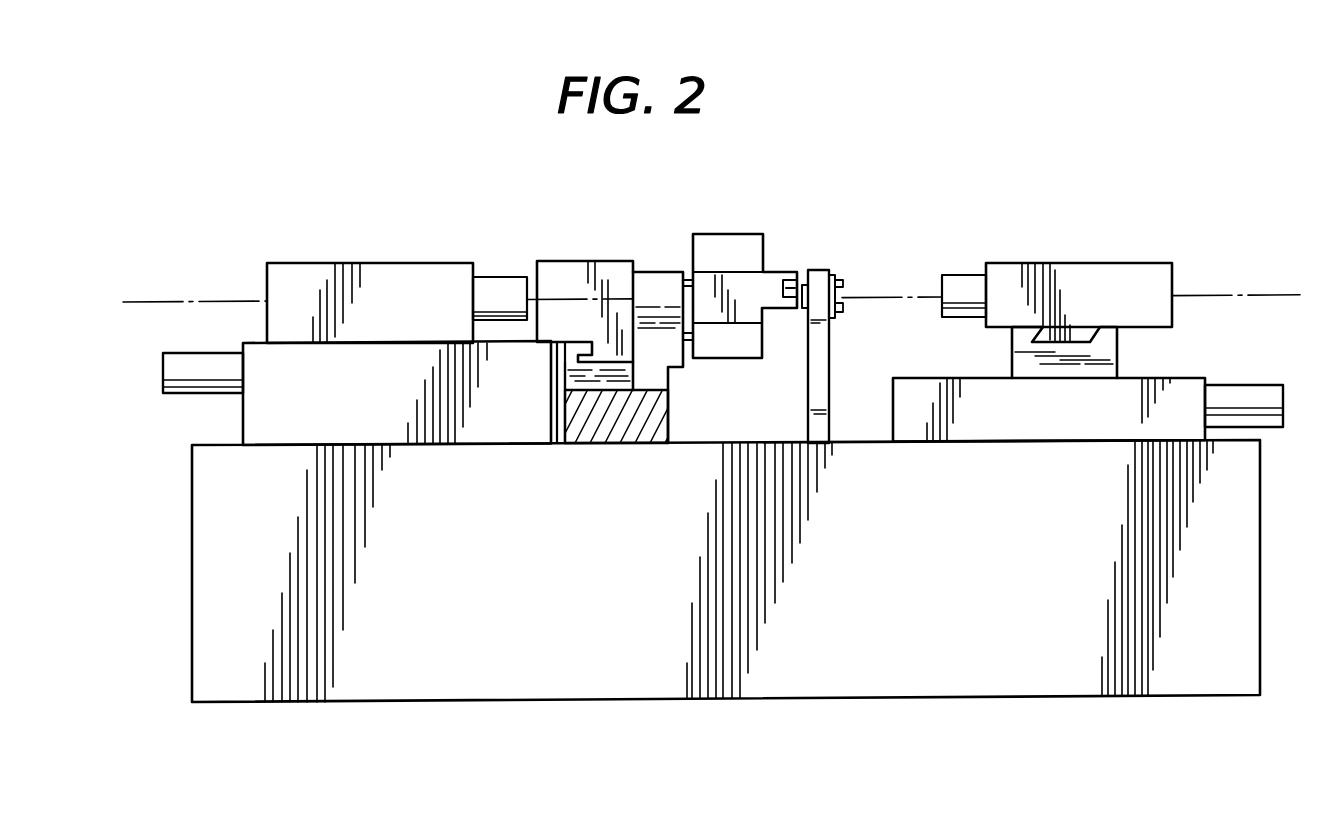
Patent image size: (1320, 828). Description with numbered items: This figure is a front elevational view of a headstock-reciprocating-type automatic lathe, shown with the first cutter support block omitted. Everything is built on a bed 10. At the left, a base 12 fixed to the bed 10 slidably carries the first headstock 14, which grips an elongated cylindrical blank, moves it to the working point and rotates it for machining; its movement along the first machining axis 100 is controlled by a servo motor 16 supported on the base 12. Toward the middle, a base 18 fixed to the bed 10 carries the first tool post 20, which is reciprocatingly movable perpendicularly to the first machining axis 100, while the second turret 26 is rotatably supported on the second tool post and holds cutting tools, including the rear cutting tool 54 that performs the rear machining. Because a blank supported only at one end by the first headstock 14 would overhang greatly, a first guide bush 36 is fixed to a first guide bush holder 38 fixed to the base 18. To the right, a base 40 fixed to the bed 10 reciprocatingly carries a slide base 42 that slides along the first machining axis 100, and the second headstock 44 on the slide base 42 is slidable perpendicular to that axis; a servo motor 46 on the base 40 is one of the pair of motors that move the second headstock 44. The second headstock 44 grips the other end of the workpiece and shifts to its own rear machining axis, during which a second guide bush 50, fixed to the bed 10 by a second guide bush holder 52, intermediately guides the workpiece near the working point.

The bed 10 is at (1240, 616).
The base 12 is at (489, 423).
The first headstock 14 is at (406, 283).
The servo motor 16 is at (181, 373).
The base 18 is at (610, 430).
The first tool post 20 is at (560, 280).
The second turret 26 is at (740, 285).
The first guide bush 36 is at (693, 297).
The first guide bush holder 38 is at (655, 282).
The base 40 is at (1015, 420).
The slide base 42 is at (1100, 353).
The second headstock 44 is at (1067, 280).
The servo motor 46 is at (1233, 404).
The second guide bush 50 is at (842, 288).
The second guide bush holder 52 is at (820, 377).
The rear cutting tool 54 is at (790, 280).
The first machining axis 100 is at (178, 302).